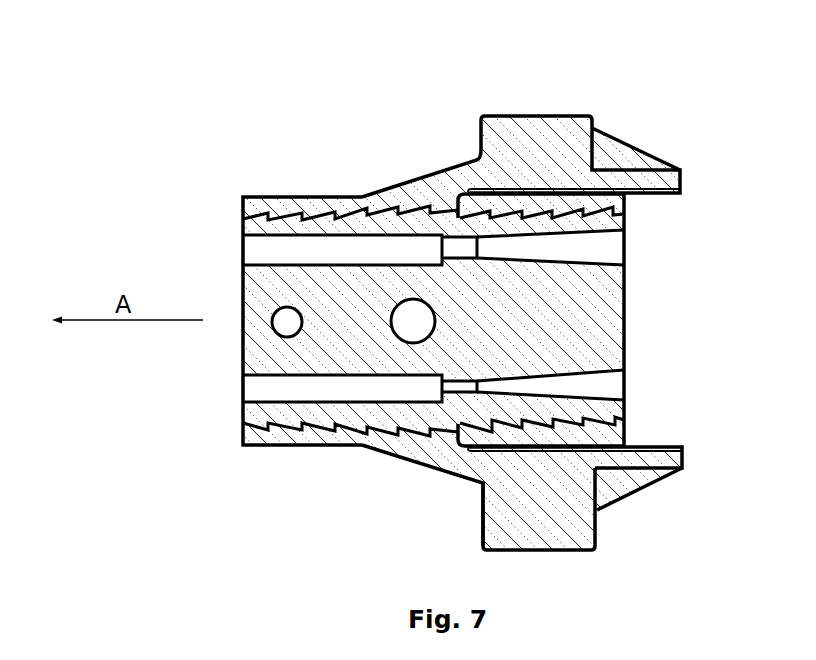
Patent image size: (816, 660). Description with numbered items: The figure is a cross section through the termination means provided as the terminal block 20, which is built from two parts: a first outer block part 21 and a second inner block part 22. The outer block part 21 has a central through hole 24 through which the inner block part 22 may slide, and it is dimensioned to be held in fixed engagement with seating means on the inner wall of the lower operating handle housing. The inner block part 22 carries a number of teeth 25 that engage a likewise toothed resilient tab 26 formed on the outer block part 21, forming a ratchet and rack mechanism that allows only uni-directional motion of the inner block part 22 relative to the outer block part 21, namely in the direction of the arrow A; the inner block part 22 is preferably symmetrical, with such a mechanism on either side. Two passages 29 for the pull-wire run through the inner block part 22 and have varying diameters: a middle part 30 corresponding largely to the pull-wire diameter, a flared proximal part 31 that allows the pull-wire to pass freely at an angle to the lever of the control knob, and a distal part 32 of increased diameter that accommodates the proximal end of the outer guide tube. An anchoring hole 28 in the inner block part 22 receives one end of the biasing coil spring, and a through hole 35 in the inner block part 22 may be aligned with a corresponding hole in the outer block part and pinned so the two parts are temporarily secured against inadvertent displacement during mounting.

The terminal block 20 is at (172, 230).
The first outer block part 21 is at (483, 508).
The second inner block part 22 is at (625, 335).
The central through hole 24 is at (660, 238).
The teeth 25 is at (298, 215).
The toothed resilient tab 26 is at (413, 183).
The anchoring hole 28 is at (274, 332).
The passages 29 is at (255, 252).
The middle part of the passage 30 is at (448, 240).
The proximal part of the passage 31 is at (583, 238).
The distal part of the passage 32 is at (347, 262).
The through hole 35 is at (403, 342).